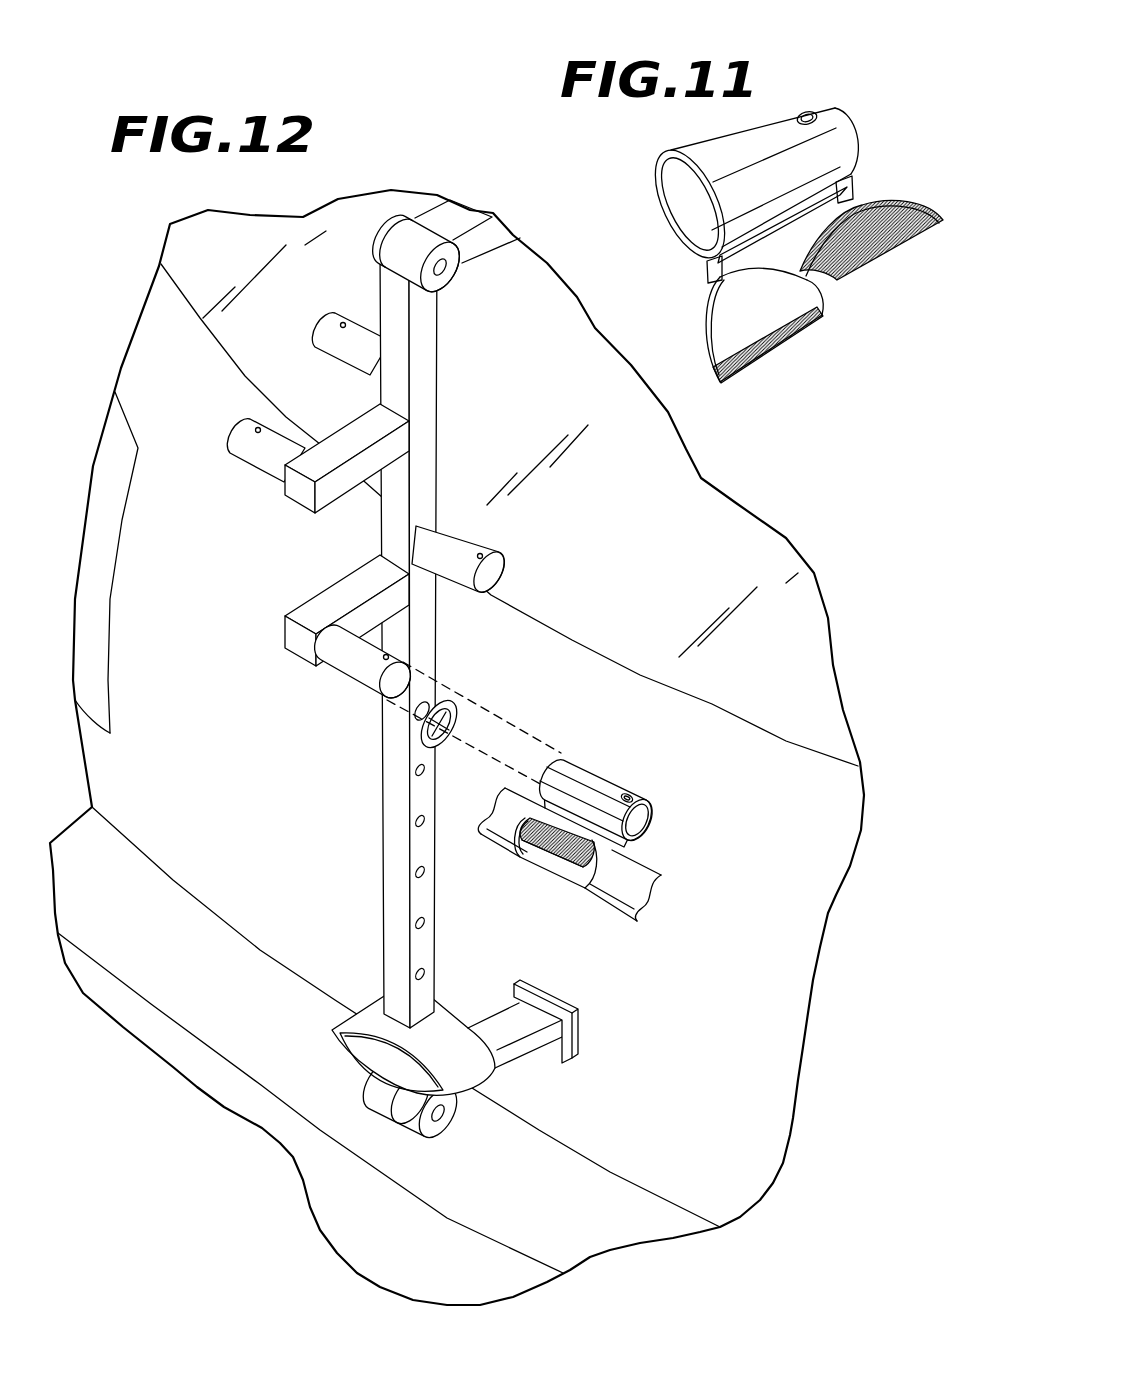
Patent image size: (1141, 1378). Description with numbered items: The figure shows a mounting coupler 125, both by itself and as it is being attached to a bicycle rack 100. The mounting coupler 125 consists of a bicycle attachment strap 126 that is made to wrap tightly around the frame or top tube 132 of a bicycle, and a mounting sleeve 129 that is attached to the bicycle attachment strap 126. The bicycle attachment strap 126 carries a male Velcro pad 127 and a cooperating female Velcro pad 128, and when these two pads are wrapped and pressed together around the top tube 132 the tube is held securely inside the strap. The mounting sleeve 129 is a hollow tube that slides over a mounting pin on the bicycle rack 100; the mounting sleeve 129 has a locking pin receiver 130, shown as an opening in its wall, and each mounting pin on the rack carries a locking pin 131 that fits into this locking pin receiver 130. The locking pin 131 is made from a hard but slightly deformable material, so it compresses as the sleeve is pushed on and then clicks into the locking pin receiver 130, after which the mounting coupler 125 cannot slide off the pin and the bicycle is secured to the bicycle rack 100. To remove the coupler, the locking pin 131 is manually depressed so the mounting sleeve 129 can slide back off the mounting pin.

In FIG. 12, the bicycle rack 100 is at (272, 567).
In FIG. 11, the mounting coupler 125 is at (757, 238).
In FIG. 12, the mounting coupler 125 is at (633, 809).
In FIG. 11, the bicycle attachment strap 126 is at (792, 294).
In FIG. 12, the bicycle attachment strap 126 is at (548, 868).
In FIG. 11, the male Velcro pad 127 is at (748, 346).
In FIG. 11, the female Velcro pad 128 is at (854, 227).
In FIG. 12, the female Velcro pad 128 is at (570, 842).
In FIG. 11, the mounting sleeve 129 is at (661, 183).
In FIG. 12, the mounting sleeve 129 is at (587, 774).
In FIG. 11, the locking pin receiver 130 is at (803, 114).
In FIG. 12, the locking pin receiver 130 is at (630, 793).
In FIG. 12, the locking pin 131 is at (389, 655).
In FIG. 12, the top tube 132 is at (634, 925).